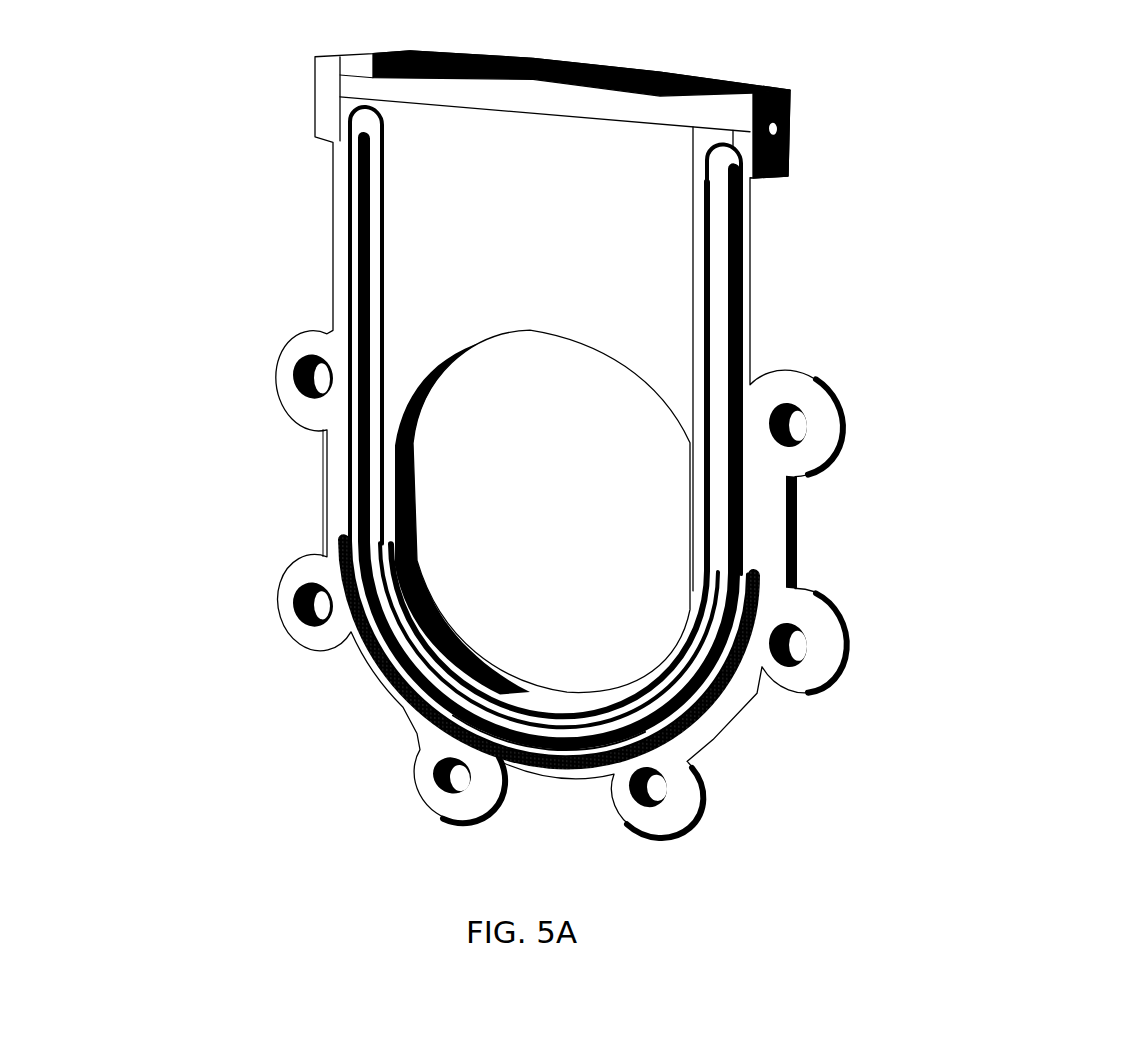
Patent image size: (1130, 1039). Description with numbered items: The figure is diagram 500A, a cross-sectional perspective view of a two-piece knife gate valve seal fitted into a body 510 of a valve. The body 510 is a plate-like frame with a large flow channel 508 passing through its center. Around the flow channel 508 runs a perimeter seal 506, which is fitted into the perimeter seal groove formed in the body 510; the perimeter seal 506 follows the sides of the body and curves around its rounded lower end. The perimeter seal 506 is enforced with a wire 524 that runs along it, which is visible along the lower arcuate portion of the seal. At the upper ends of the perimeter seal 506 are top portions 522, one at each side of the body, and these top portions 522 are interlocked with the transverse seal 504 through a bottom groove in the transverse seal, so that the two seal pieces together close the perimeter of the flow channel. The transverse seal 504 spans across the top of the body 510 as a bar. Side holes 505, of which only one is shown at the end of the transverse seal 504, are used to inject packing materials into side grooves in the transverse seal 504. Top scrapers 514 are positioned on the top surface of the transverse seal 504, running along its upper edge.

The diagram 500A is at (963, 93).
The transverse seal 504 is at (420, 87).
The top scrapers 514 is at (690, 84).
The side holes 505 is at (785, 127).
The top portions 522 is at (366, 108).
The body 510 is at (330, 242).
The perimeter seal 506 is at (355, 483).
The flow channel 508 is at (495, 538).
The wire 524 is at (430, 683).